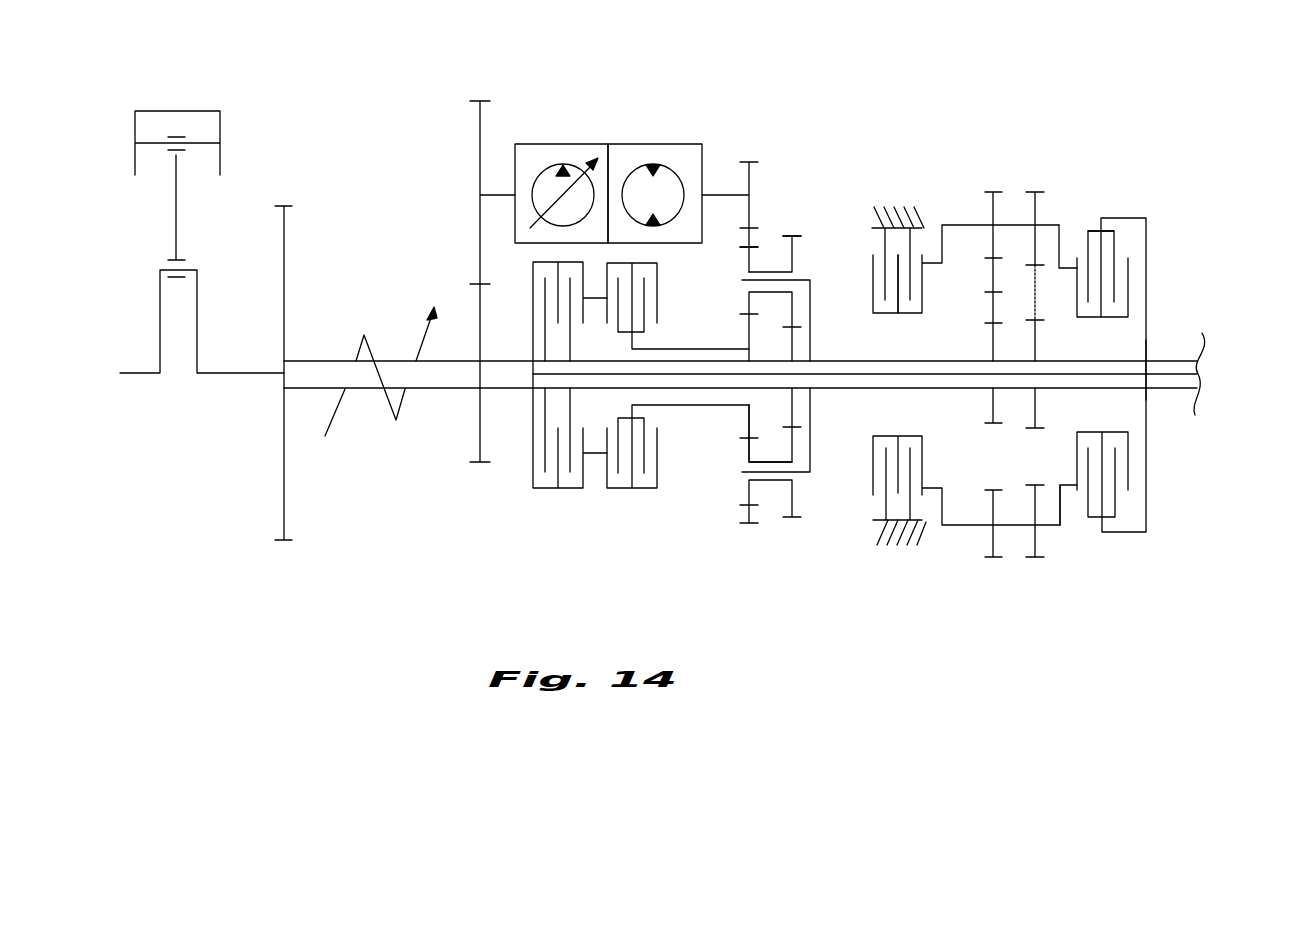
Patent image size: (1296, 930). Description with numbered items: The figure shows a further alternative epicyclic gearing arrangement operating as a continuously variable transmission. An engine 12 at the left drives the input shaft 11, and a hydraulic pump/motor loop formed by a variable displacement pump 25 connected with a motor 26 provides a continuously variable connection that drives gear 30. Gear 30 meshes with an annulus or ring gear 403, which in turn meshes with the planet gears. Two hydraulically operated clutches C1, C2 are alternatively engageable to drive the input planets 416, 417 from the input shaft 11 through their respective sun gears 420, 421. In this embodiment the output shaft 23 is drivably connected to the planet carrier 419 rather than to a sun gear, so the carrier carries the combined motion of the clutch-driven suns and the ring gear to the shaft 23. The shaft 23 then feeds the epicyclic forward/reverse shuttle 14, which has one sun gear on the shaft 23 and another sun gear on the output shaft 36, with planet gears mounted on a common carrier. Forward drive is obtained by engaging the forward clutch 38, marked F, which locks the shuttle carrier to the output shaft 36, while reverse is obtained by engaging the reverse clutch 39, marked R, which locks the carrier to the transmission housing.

The engine 12 is at (177, 110).
The input shaft 11 is at (460, 367).
The variable displacement pump 25 is at (558, 152).
The motor 26 is at (673, 152).
The gear 30 is at (752, 172).
The annulus gear 403 is at (750, 237).
The input planet 416 is at (747, 262).
The input planet 417 is at (795, 258).
The planet carrier 419 is at (812, 295).
The sun gear 420 is at (748, 418).
The sun gear 421 is at (793, 405).
The output shaft 23 is at (885, 358).
The clutch 39 is at (898, 258).
The clutch 38 is at (1103, 266).
The output shaft 36 is at (1168, 358).
The epicyclic forward/reverse shuttle 14 is at (1066, 551).
The hydraulically operated clutch C1 is at (533, 322).
The hydraulically operated clutch C2 is at (657, 296).
The reverse brake R is at (966, 361).
The forward clutch F is at (1111, 356).